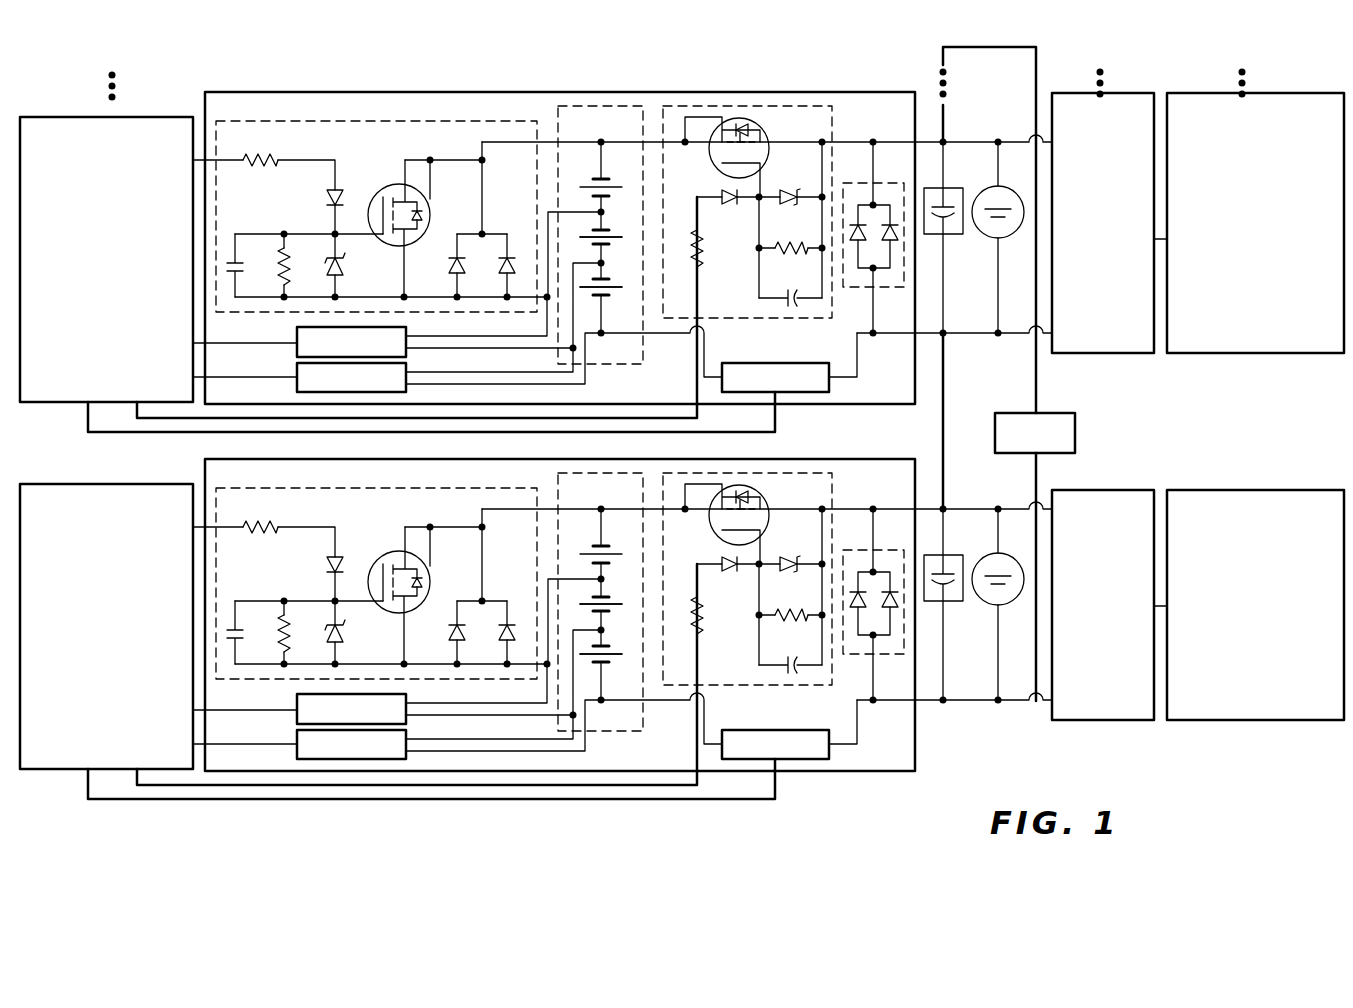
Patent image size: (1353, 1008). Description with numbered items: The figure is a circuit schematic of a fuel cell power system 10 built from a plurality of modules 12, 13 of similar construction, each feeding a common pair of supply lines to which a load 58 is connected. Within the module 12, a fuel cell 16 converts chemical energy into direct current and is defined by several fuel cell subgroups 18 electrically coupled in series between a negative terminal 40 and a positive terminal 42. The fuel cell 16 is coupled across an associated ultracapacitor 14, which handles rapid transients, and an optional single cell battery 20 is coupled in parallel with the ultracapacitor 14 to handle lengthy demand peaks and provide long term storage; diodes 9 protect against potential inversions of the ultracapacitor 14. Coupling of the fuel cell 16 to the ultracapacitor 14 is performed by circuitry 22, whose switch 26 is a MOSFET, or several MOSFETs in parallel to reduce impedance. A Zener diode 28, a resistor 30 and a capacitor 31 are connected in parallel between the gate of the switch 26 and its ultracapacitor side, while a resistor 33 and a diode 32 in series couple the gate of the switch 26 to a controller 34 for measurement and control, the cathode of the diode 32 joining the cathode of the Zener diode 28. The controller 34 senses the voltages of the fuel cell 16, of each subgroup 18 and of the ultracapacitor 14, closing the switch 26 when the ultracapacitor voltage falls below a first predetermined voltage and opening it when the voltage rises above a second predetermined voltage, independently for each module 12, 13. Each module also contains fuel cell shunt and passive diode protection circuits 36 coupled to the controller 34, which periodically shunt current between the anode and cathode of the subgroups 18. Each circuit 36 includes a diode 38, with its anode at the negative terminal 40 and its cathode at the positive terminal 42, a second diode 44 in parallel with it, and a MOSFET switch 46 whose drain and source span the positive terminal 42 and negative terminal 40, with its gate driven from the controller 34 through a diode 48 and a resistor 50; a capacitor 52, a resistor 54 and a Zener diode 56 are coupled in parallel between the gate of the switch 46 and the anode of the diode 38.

The diodes 9 is at (862, 183).
The fuel cell power system 10 is at (153, 54).
The module 12 is at (316, 86).
The module 13 is at (828, 456).
The ultracapacitor 14 is at (943, 236).
The fuel cell 16 is at (618, 366).
The fuel cell subgroups 18 is at (622, 262).
The battery 20 is at (997, 186).
The circuitry 22 is at (810, 355).
The switch 26 is at (766, 120).
The Zener diode 28 is at (801, 190).
The resistor 30 is at (778, 246).
The capacitor 31 is at (782, 297).
The diode 32 is at (706, 196).
The resistor 33 is at (701, 255).
The control circuitry 34 is at (87, 117).
The fuel cell shunt and passive diode protection circuit 36 is at (284, 316).
The diode 38 is at (452, 268).
The negative terminal 40 is at (600, 336).
The positive terminal 42 is at (597, 140).
The second diode 44 is at (516, 258).
The switch 46 is at (432, 221).
The diode 48 is at (345, 197).
The resistor 50 is at (259, 166).
The capacitor 52 is at (227, 260).
The resistor 54 is at (282, 255).
The Zener diode 56 is at (340, 284).
The load 58 is at (1075, 433).